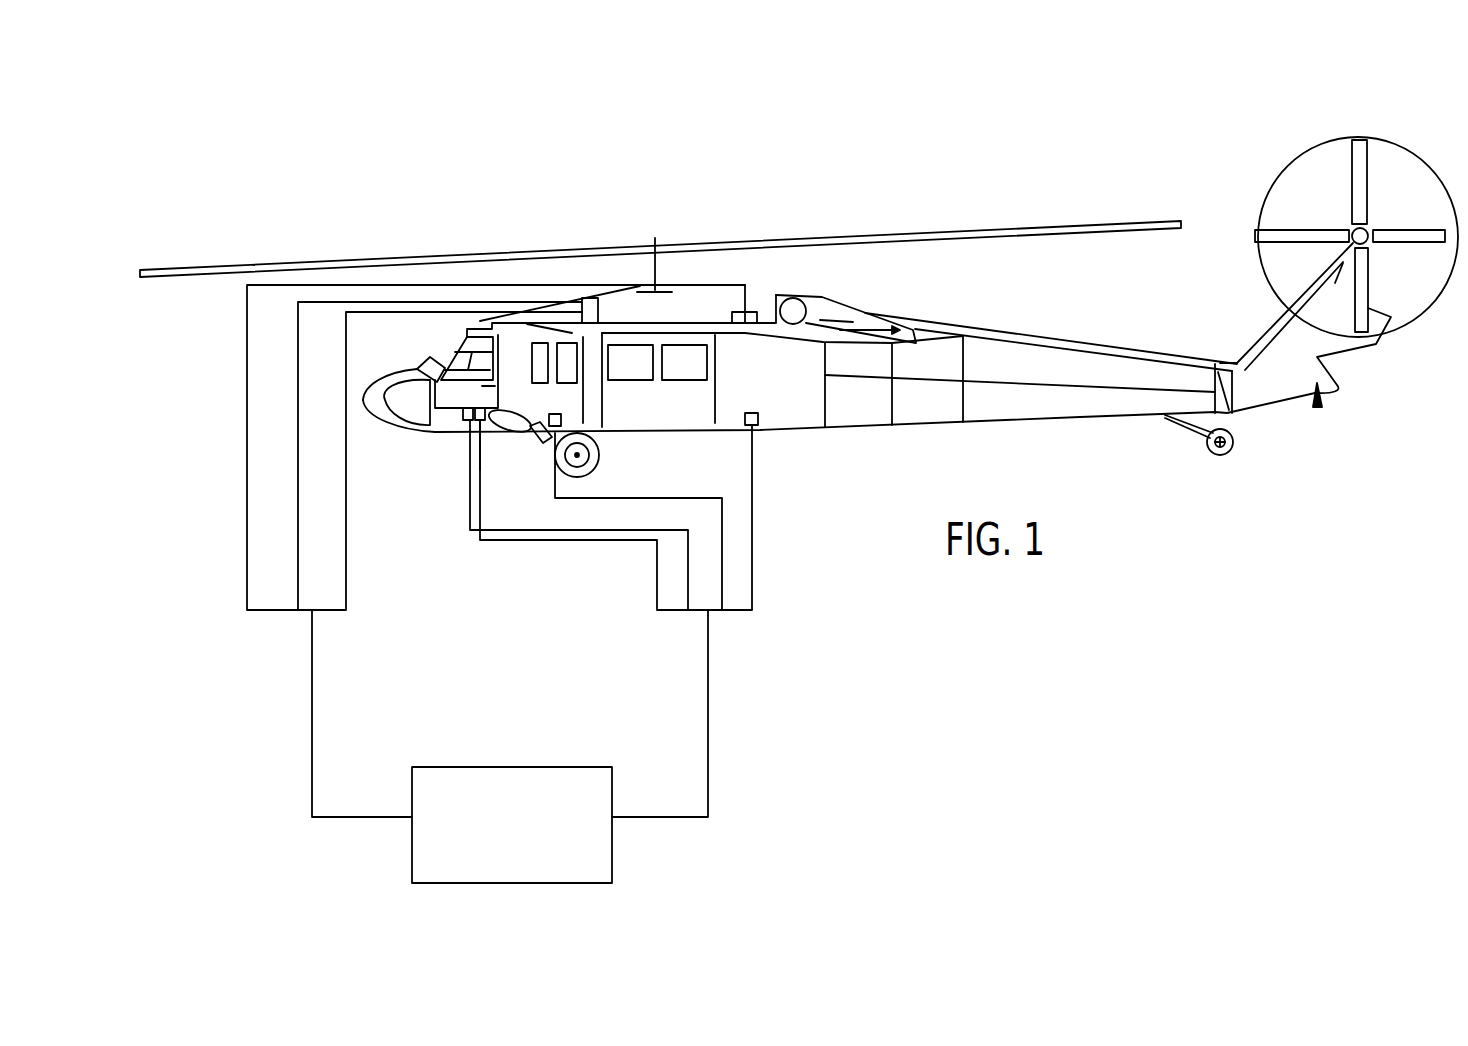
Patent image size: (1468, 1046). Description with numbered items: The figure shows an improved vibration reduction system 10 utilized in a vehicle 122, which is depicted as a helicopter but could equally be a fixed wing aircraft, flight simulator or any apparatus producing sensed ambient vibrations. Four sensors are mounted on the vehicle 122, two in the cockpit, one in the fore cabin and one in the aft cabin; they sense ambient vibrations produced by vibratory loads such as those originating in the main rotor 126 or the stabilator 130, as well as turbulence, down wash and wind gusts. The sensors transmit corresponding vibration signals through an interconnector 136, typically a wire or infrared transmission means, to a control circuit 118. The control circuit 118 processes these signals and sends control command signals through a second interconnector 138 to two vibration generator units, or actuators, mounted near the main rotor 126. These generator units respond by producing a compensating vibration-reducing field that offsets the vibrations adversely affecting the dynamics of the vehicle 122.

The vibration reduction system 10 is at (310, 134).
The vehicle 122 is at (1017, 315).
The rotor 126 is at (660, 282).
The stabilator 130 is at (1356, 319).
The interconnector 138 is at (312, 708).
The interconnector 136 is at (708, 662).
The control circuit 118 is at (523, 835).